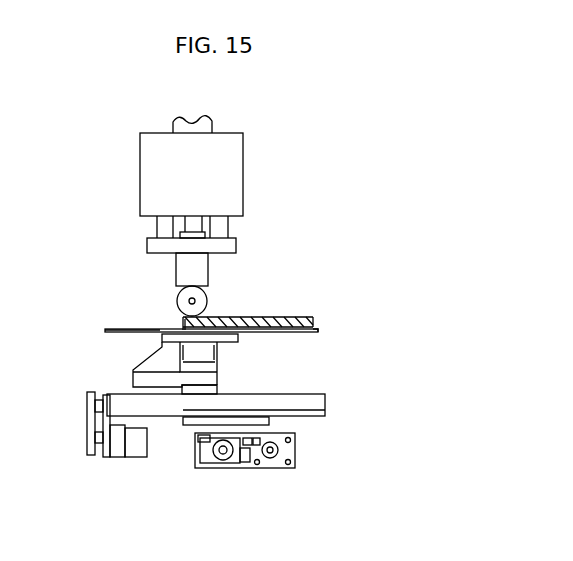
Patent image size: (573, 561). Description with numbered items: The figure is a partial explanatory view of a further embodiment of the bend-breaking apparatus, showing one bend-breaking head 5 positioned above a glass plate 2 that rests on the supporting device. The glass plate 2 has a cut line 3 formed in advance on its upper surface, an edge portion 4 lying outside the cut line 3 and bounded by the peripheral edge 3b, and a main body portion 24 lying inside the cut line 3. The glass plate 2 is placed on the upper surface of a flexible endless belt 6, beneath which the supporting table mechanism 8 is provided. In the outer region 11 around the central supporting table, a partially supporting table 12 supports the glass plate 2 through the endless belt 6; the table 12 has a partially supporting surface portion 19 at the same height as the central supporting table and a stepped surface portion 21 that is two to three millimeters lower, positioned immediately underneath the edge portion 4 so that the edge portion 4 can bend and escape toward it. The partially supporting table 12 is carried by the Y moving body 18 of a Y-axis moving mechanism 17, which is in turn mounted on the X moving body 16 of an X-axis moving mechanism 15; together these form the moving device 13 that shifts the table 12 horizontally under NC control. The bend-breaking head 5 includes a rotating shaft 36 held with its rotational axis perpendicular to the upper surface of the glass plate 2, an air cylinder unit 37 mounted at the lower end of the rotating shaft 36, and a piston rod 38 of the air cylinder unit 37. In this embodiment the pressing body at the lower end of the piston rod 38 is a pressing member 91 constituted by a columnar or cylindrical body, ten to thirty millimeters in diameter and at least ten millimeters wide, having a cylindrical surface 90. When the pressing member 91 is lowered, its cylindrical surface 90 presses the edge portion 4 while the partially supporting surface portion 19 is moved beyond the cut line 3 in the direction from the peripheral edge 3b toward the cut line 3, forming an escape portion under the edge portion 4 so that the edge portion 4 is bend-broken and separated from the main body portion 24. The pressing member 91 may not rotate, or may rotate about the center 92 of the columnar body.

The rotating shaft 36 is at (203, 125).
The air cylinder unit 37 is at (231, 176).
The piston rod 38 is at (192, 226).
The bend-breaking head 5 is at (145, 226).
The cylindrical surface 90 is at (188, 318).
The pressing member 91 is at (195, 301).
The center of the columnar body 92 is at (205, 294).
The glass plate 2 is at (295, 318).
The cut line 3 is at (205, 317).
The peripheral edge 3b is at (182, 327).
The edge portion 4 is at (182, 325).
The main body portion 24 is at (313, 322).
The endless belt 6 is at (125, 328).
The supporting table mechanism 8 is at (120, 344).
The partially supporting surface portion 19 is at (202, 337).
The stepped surface portion 21 is at (170, 336).
The Y moving body 18 is at (150, 391).
The partially supporting table 12 is at (240, 377).
The outer region 11 is at (337, 373).
The Y-axis moving mechanism 17 is at (307, 408).
The X moving body 16 is at (212, 422).
The moving device 13 is at (205, 410).
The X-axis moving mechanism 15 is at (257, 460).